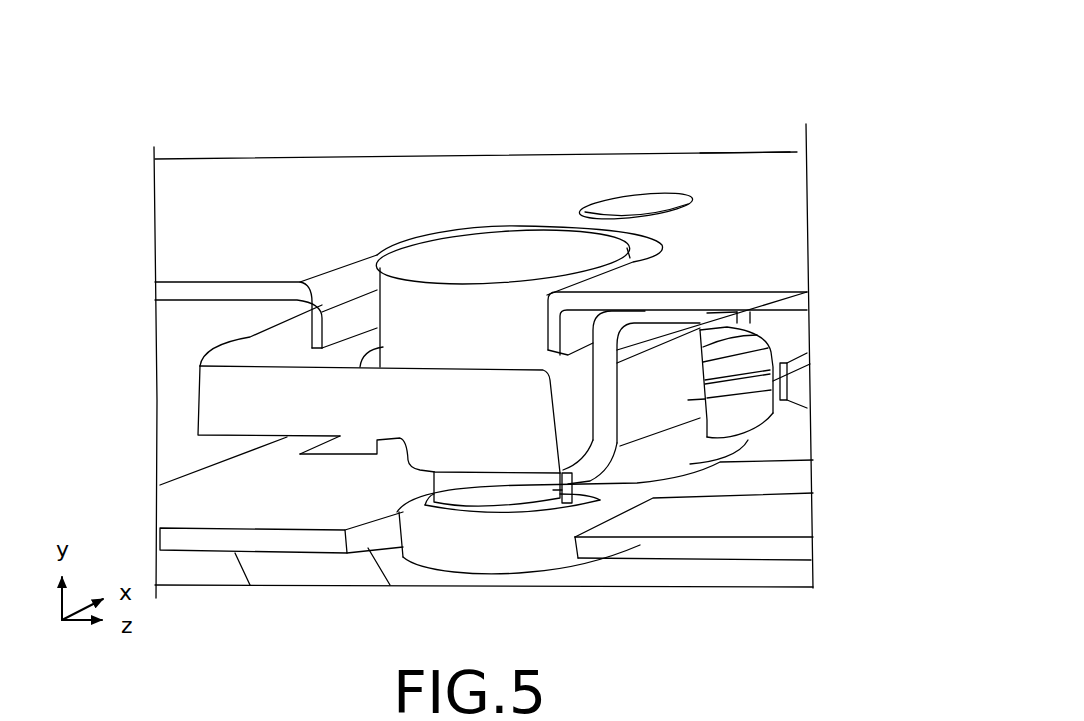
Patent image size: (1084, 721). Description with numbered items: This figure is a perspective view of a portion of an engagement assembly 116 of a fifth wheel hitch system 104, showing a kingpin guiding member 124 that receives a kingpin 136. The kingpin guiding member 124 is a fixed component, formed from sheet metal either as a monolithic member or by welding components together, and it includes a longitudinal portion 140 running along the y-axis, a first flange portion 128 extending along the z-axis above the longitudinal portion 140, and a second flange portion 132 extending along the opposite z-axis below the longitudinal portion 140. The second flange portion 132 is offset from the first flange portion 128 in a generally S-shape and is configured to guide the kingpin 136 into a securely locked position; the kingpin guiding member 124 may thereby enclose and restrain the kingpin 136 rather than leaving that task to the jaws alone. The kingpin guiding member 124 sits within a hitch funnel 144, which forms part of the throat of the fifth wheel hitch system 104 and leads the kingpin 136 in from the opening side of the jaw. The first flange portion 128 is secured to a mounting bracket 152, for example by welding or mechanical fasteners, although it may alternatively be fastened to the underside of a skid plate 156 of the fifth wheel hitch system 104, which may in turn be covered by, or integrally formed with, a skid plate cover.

The fifth wheel hitch system 104 is at (227, 108).
The engagement assembly 116 is at (809, 61).
The kingpin guiding member 124 is at (622, 320).
The first flange portion 128 is at (807, 292).
The second flange portion 132 is at (813, 461).
The kingpin 136 is at (419, 220).
The longitudinal portion 140 is at (800, 367).
The hitch funnel 144 is at (347, 287).
The mounting bracket 152 is at (575, 169).
The skid plate 156 is at (747, 175).